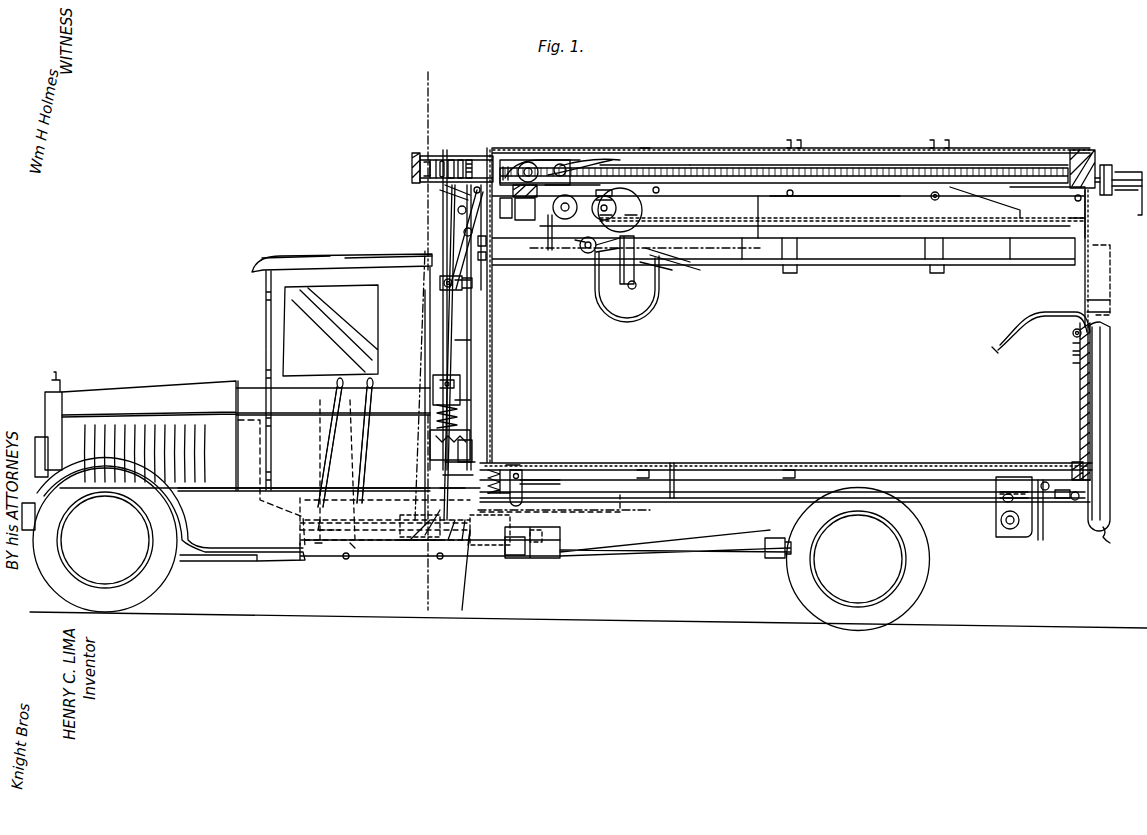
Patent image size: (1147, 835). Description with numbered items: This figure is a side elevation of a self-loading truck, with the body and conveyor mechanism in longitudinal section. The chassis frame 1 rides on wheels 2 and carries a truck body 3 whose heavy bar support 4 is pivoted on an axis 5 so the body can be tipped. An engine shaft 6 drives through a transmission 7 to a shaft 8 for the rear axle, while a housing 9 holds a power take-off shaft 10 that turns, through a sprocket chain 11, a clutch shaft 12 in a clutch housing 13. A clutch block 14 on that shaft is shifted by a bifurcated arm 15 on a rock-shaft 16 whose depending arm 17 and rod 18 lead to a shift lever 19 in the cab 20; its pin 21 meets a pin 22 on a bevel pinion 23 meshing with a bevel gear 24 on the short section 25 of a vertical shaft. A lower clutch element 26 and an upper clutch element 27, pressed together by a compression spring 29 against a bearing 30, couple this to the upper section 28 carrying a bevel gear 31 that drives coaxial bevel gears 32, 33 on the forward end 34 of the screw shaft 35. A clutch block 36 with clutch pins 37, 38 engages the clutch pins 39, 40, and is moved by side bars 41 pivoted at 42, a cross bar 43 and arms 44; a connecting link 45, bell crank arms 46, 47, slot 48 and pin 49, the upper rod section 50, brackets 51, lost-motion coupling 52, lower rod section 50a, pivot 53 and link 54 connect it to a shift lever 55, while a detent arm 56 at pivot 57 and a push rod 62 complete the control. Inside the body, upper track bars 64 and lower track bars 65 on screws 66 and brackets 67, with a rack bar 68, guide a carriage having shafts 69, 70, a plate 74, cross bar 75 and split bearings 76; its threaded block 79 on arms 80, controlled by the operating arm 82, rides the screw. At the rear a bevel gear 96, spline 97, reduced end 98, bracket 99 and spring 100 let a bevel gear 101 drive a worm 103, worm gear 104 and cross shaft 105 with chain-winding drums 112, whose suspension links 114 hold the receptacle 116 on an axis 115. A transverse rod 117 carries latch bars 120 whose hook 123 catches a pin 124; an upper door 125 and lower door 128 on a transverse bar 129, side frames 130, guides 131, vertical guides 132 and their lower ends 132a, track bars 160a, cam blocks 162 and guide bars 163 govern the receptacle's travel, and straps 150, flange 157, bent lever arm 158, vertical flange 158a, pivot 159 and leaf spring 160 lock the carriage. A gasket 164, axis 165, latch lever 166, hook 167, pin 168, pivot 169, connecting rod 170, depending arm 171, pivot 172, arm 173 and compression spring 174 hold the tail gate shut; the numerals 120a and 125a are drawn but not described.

The chassis frame 1 is at (572, 506).
The wheels 2 is at (481, 549).
The truck body 3 is at (786, 309).
The bar support 4 is at (1003, 488).
The axis 5 is at (1012, 530).
The engine shaft 6 is at (318, 548).
The transmission 7 is at (556, 556).
The shaft 8 is at (440, 100).
The housing 9 is at (530, 556).
The power take-off shaft 10 is at (500, 550).
The sprocket chain 11 is at (486, 584).
The clutch shaft 12 is at (485, 525).
The clutch housing 13 is at (425, 525).
The clutch block 14 is at (440, 540).
The bifurcated arm 15 is at (460, 548).
The rock-shaft 16 is at (448, 548).
The depending arm 17 is at (462, 560).
The rod 18 is at (348, 560).
The shift lever 19 is at (369, 445).
The cab 20 is at (265, 323).
The pin 21 is at (462, 612).
The pin 22 is at (496, 468).
The bevel pinion 23 is at (536, 530).
The bevel gear 24 is at (411, 524).
The short section 25 is at (445, 470).
The lower clutch element 26 is at (445, 457).
The upper clutch element 27 is at (470, 440).
The upper section 28 is at (450, 330).
The compression spring 29 is at (460, 412).
The bearing 30 is at (435, 390).
The bevel gear 31 is at (468, 195).
The bevel gear 32 is at (512, 160).
The bevel gear 33 is at (412, 160).
The forward end 34 is at (412, 174).
The screw shaft 35 is at (832, 152).
The clutch block 36 is at (452, 160).
The clutch pin 37 is at (458, 210).
The clutch pin 38 is at (443, 160).
The clutch pin 39 is at (462, 160).
The clutch pin 40 is at (432, 158).
The side bars 41 is at (440, 283).
The pivot 42 is at (445, 288).
The cross bar 43 is at (485, 246).
The arms 44 is at (470, 158).
The connecting link 45 is at (460, 220).
The arm 46 is at (532, 162).
The arm 47 is at (462, 230).
The slot 48 is at (462, 248).
The pin 49 is at (506, 220).
The upper rod section 50 is at (370, 259).
The lower rod section 50a is at (408, 533).
The brackets 51 is at (473, 286).
The lost-motion coupling 52 is at (455, 452).
The pivot 53 is at (440, 489).
The link 54 is at (330, 521).
The shift lever 55 is at (330, 449).
The detent arm 56 is at (312, 259).
The pivot 57 is at (488, 258).
The push rod 62 is at (516, 212).
The upper track bars 64 is at (835, 191).
The lower track bars 65 is at (759, 210).
The screws 66 is at (658, 190).
The brackets 67 is at (797, 248).
The rack bar 68 is at (755, 248).
The shaft 69 is at (538, 219).
The shaft 70 is at (570, 217).
The plate 74 is at (564, 274).
The cross bar 75 is at (566, 165).
The split bearings 76 is at (534, 237).
The threaded block 79 is at (602, 160).
The arms 80 is at (560, 160).
The operating arm 82 is at (645, 158).
The bevel gear 96 is at (1106, 163).
The spline 97 is at (1097, 190).
The reduced end 98 is at (1080, 148).
The bracket 99 is at (1140, 170).
The spring 100 is at (1120, 195).
The bevel gear 101 is at (784, 166).
The worm 103 is at (842, 211).
The worm gear 104 is at (660, 222).
The cross shaft 105 is at (612, 213).
The chain-winding drums 112 is at (879, 157).
The suspension links 114 is at (668, 285).
The axis 115 is at (632, 300).
The receptacle 116 is at (615, 310).
The transverse rod 117 is at (585, 255).
The latch bar 120 is at (598, 262).
The cable end 120a is at (575, 250).
The hook 123 is at (700, 262).
The pin 124 is at (690, 275).
The upper door 125 is at (1085, 300).
The cable 125a is at (1040, 318).
The lower door 128 is at (1080, 405).
The transverse bar 129 is at (1073, 336).
The vertical side frames 130 is at (1070, 228).
The guides 131 is at (1100, 283).
The vertical guides 132 is at (1095, 376).
The lower ends 132a is at (1115, 545).
The straps 150 is at (600, 180).
The flange 157 is at (1015, 200).
The bent lever arm 158 is at (985, 205).
The vertical flange 158a is at (1003, 247).
The pivot 159 is at (930, 196).
The leaf spring 160 is at (575, 160).
The track bars 160a is at (880, 265).
The cam blocks 162 is at (632, 292).
The guide bars 163 is at (990, 348).
The gasket 164 is at (1085, 478).
The axis 165 is at (1045, 480).
The latch lever 166 is at (1040, 545).
The hook 167 is at (1082, 496).
The pin 168 is at (1075, 502).
The pivot 169 is at (1002, 505).
The connecting rod 170 is at (752, 490).
The depending arm 171 is at (556, 484).
The pivot 172 is at (524, 470).
The arm 173 is at (520, 462).
The compression spring 174 is at (488, 493).